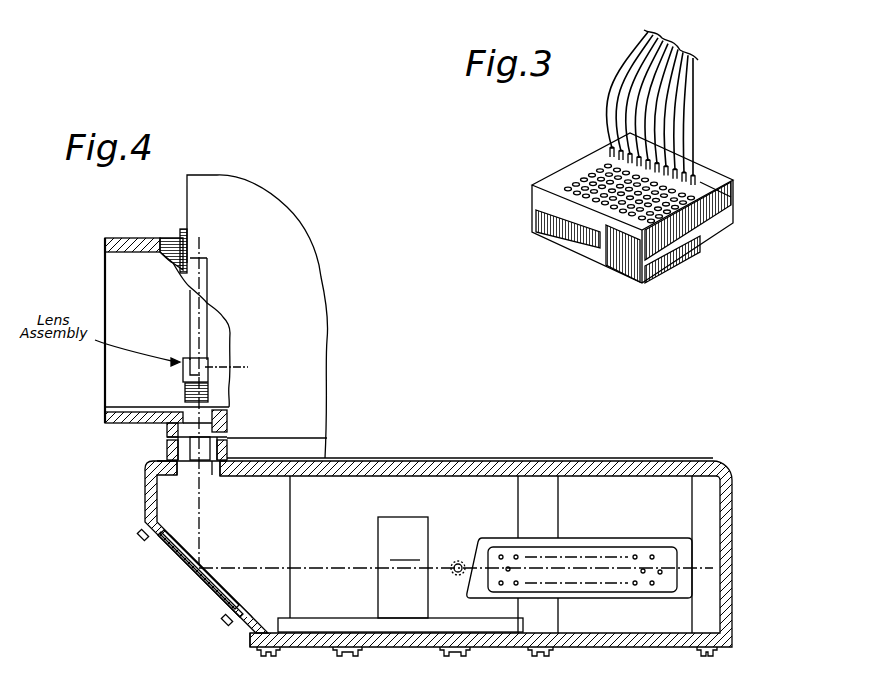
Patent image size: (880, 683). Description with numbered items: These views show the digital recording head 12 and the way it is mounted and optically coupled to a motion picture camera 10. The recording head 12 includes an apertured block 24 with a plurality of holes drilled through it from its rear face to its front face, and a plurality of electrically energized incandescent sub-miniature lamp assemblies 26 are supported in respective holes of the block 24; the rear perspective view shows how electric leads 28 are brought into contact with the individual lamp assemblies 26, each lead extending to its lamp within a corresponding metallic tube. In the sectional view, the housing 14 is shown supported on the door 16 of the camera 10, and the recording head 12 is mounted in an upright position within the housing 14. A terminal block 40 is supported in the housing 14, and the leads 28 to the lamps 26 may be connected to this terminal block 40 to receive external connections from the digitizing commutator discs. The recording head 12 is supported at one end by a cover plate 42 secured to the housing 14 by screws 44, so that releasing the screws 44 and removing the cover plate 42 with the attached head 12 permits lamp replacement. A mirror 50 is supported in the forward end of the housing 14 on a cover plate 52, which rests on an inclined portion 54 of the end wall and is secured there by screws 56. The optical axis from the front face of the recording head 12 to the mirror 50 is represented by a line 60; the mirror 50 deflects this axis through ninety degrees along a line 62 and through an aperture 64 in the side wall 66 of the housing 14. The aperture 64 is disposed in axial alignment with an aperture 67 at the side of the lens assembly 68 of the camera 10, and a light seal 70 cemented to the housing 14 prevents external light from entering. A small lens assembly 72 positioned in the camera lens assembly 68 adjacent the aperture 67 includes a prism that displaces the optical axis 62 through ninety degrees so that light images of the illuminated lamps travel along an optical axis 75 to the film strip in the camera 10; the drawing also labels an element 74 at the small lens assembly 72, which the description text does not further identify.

In FIG. 4, the motion picture camera 10 is at (312, 331).
In FIG. 3, the digital recording head 12 is at (556, 174).
In FIG. 4, the digital recording head 12 is at (409, 591).
In FIG. 4, the housing 14 is at (564, 617).
In FIG. 4, the door 16 is at (315, 448).
In FIG. 3, the apertured block 24 is at (733, 166).
In FIG. 3, the sub-miniature lamp assemblies 26 is at (613, 156).
In FIG. 3, the leads 28 is at (646, 103).
In FIG. 4, the terminal block 40 is at (610, 586).
In FIG. 4, the cover plate 42 is at (415, 647).
In FIG. 4, the screws 44 is at (363, 651).
In FIG. 4, the mirror 50 is at (182, 554).
In FIG. 4, the cover plate 52 is at (200, 584).
In FIG. 4, the inclined portion 54 is at (252, 637).
In FIG. 4, the screws 56 is at (147, 541).
In FIG. 4, the optical axis 60 is at (262, 568).
In FIG. 4, the optical axis 62 is at (198, 535).
In FIG. 4, the aperture 64 is at (194, 470).
In FIG. 4, the side wall 66 is at (512, 470).
In FIG. 4, the aperture 67 is at (195, 415).
In FIG. 4, the lens assembly 68 is at (130, 428).
In FIG. 4, the light seal 70 is at (160, 448).
In FIG. 4, the small lens assembly 72 is at (208, 388).
In FIG. 4, the screw head 74 is at (192, 375).
In FIG. 4, the optical axis 75 is at (250, 366).